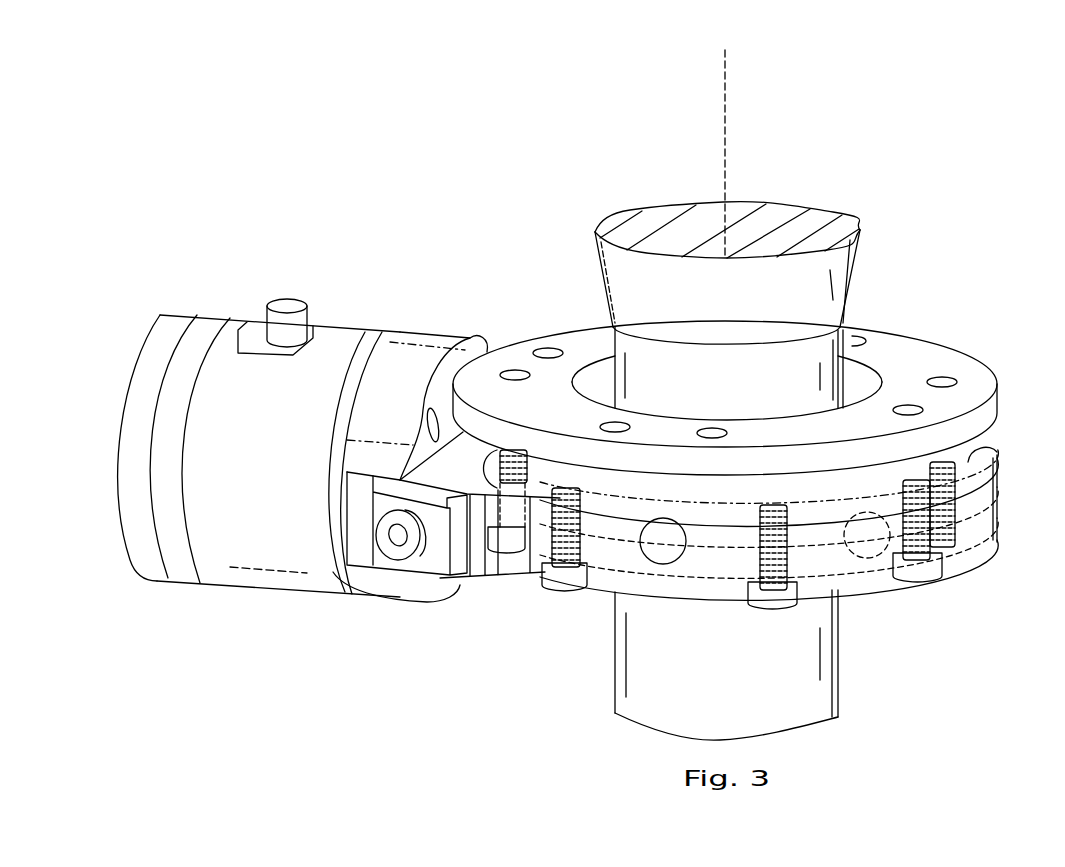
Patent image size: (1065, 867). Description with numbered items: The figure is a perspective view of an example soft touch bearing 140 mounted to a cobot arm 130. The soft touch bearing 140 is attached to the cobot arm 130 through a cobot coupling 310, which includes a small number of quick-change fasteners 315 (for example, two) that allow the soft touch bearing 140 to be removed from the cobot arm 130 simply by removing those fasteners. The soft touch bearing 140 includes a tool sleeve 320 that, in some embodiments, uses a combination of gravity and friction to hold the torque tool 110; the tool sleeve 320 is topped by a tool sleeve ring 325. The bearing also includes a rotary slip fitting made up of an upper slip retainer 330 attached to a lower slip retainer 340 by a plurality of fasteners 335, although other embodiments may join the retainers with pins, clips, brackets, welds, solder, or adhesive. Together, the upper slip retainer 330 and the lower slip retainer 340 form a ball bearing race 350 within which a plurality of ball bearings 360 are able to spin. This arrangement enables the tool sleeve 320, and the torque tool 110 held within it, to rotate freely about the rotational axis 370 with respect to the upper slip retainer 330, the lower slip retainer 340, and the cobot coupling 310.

The torque tool 110 is at (611, 686).
The cobot arm 130 is at (190, 313).
The soft touch bearing 140 is at (476, 210).
The cobot coupling 310 is at (418, 332).
The quick-change fasteners 315 is at (400, 568).
The tool sleeve 320 is at (867, 377).
The tool sleeve ring 325 is at (973, 353).
The upper slip retainer 330 is at (962, 563).
The fasteners 335 is at (512, 563).
The lower slip retainer 340 is at (993, 447).
The ball bearing race 350 is at (720, 535).
The ball bearings 360 is at (536, 458).
The rotational axis 370 is at (727, 122).